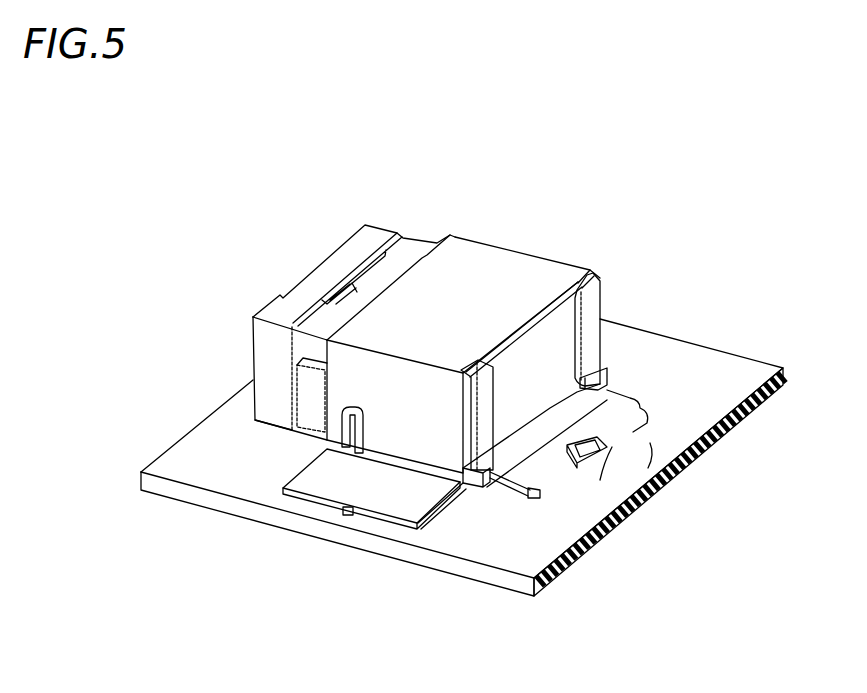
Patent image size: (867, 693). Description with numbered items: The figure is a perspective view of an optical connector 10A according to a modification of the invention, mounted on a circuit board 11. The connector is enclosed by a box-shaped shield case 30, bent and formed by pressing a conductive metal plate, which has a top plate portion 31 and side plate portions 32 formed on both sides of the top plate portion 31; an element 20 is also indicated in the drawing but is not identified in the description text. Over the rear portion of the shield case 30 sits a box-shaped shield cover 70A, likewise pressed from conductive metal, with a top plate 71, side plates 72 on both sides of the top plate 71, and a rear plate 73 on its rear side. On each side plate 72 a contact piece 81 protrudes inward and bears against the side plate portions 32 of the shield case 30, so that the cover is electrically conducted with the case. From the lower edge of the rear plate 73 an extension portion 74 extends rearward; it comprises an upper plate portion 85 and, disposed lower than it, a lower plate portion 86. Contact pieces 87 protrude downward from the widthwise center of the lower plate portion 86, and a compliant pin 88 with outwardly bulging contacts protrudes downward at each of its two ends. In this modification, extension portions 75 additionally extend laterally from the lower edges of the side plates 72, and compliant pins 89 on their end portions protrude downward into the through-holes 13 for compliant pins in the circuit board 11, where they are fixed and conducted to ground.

The optical connector 10A is at (462, 200).
The circuit board 11 is at (179, 463).
The through-holes for compliant pins 13 is at (356, 511).
The housing 20 is at (293, 285).
The shield case 30 is at (418, 234).
The top plate portion 31 is at (350, 285).
The side plate portions 32 is at (295, 348).
The shield cover 70A is at (552, 252).
The top plate 71 is at (490, 262).
The side plates 72 is at (423, 447).
The rear plate 73 is at (556, 408).
The extension portion 74 is at (643, 408).
The extension portions 75 is at (330, 482).
The contact piece 81 is at (345, 432).
The upper plate portion 85 is at (610, 393).
The lower plate portion 86 is at (630, 425).
The contact pieces 87 is at (650, 445).
The compliant pin 88 is at (530, 500).
The compliant pins 89 is at (343, 514).